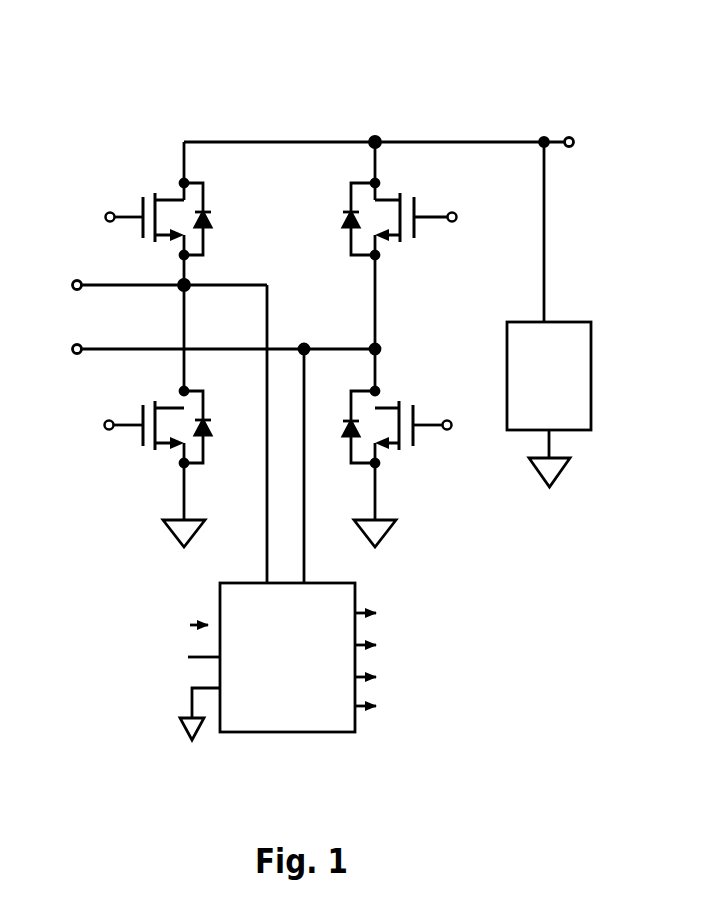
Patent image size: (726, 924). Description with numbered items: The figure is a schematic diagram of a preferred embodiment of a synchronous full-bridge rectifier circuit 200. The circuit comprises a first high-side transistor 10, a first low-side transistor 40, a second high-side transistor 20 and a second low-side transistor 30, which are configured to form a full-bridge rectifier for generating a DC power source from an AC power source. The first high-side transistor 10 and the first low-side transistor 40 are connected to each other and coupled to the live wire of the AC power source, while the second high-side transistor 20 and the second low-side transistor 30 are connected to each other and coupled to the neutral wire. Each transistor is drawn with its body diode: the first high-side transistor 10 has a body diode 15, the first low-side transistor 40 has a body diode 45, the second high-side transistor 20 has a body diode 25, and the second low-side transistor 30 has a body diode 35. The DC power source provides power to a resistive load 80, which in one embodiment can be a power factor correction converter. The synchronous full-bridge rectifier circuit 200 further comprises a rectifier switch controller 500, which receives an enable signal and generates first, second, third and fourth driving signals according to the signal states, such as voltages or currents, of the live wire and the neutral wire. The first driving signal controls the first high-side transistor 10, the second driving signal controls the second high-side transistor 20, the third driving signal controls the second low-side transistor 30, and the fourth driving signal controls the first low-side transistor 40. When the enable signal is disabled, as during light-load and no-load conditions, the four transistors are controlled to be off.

The synchronous full-bridge rectifier circuit 200 is at (165, 40).
The first high-side transistor 10 is at (129, 201).
The body diode 15 is at (211, 219).
The second high-side transistor 20 is at (431, 201).
The body diode 25 is at (343, 219).
The second low-side transistor 30 is at (429, 412).
The body diode 35 is at (345, 427).
The first low-side transistor 40 is at (129, 412).
The body diode 45 is at (211, 427).
The resistive load 80 is at (560, 393).
The rectifier switch controller 500 is at (309, 716).